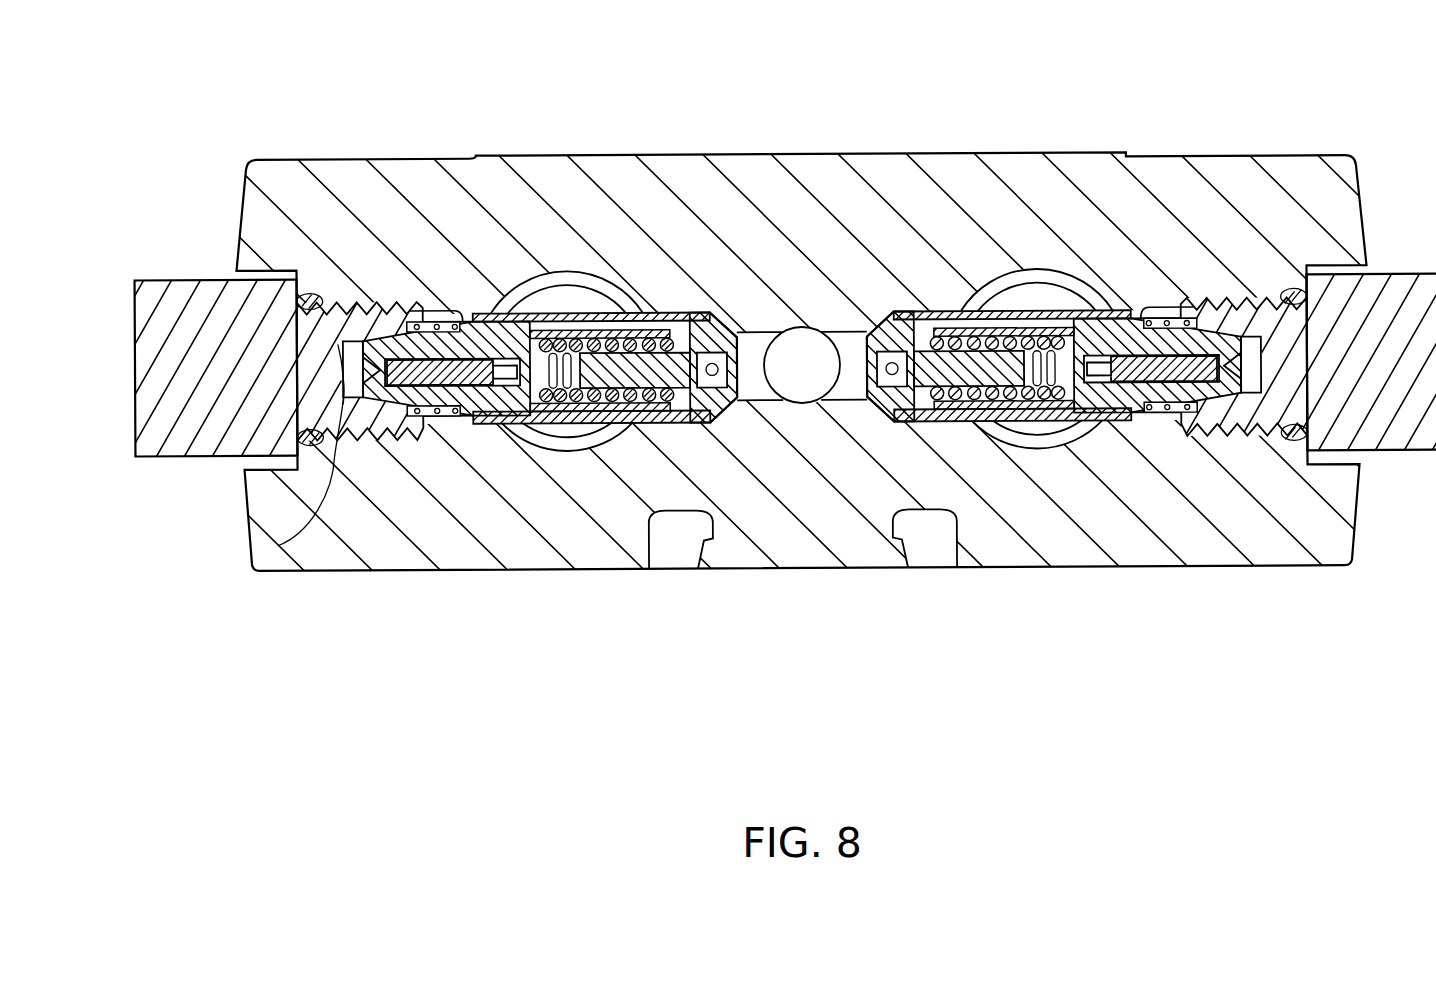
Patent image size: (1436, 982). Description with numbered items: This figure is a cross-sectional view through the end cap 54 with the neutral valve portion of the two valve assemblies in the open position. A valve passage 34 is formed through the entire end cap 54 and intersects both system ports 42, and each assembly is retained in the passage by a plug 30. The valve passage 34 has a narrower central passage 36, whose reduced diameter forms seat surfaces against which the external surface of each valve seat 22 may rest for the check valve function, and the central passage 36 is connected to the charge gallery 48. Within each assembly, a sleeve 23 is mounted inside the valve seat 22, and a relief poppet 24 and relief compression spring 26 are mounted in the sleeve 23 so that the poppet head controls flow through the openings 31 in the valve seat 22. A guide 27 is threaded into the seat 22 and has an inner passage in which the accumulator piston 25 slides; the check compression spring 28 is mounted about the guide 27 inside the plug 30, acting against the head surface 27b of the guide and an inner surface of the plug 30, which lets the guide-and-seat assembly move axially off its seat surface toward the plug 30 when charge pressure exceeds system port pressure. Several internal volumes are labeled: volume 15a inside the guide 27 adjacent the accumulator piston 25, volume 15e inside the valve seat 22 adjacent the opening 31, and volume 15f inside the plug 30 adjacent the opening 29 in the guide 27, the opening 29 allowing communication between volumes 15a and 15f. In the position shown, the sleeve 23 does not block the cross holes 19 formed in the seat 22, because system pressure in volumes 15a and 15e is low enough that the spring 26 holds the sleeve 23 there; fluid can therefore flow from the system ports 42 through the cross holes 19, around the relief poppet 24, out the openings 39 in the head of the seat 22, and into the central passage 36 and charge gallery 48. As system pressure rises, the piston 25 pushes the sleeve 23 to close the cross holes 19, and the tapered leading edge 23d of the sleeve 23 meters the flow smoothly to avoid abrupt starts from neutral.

The volume 15a is at (345, 402).
The volume 15e is at (887, 407).
The volume 15f is at (441, 312).
The cross holes 19 is at (645, 312).
The valve seat 22 is at (687, 310).
The sleeve 23 is at (582, 417).
The leading edge 23d is at (660, 312).
The relief poppet 24 is at (710, 412).
The accumulator piston 25 is at (482, 307).
The relief compression spring 26 is at (543, 420).
The guide 27 is at (505, 417).
The head surface 27b is at (487, 424).
The check compression spring 28 is at (447, 420).
The opening 29 is at (277, 543).
The plug 30 is at (197, 455).
The openings 31 is at (727, 320).
The valve passage 34 is at (1137, 308).
The central passage 36 is at (858, 355).
The openings 39 is at (760, 345).
The system ports 42 is at (560, 297).
The charge gallery 48 is at (787, 380).
The end cap 54 is at (1270, 568).